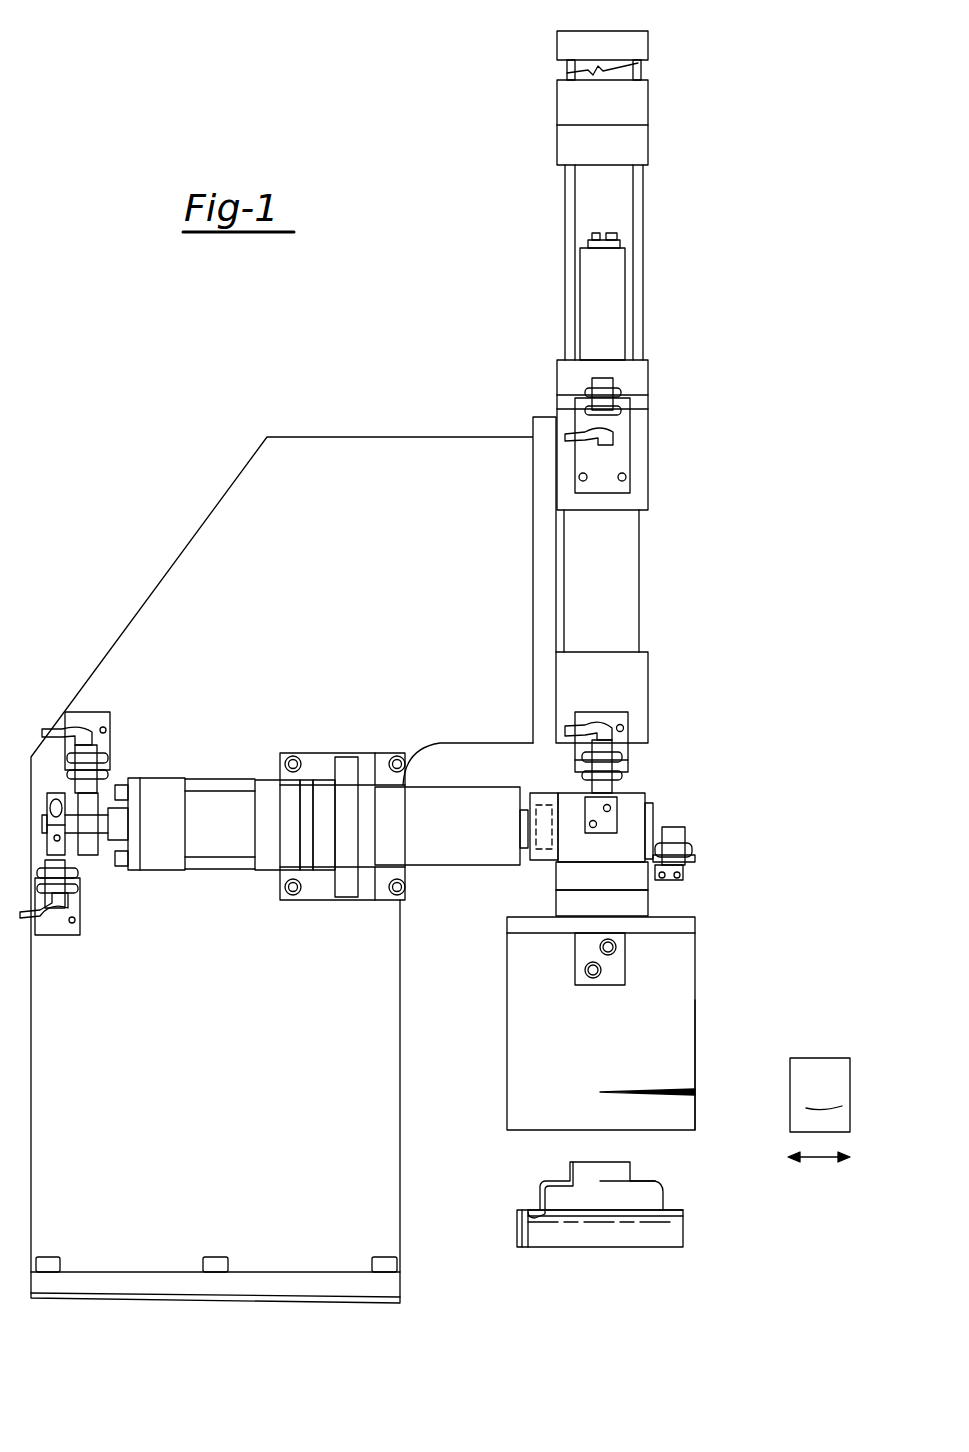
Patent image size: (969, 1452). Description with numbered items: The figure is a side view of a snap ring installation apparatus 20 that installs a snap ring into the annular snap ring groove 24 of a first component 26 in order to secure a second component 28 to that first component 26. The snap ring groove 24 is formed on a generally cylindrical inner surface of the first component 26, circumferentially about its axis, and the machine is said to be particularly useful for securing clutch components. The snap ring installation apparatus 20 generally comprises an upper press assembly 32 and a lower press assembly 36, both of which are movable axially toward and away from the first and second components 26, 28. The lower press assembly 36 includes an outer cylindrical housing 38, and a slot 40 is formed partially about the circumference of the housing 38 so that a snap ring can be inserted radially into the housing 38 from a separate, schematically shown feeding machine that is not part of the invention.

The snap ring installation apparatus 20 is at (641, 596).
The annular snap ring groove 24 is at (527, 1210).
The first component 26 is at (508, 1231).
The second component 28 is at (664, 1178).
The upper press assembly 32 is at (546, 878).
The lower press assembly 36 is at (705, 953).
The outer cylindrical housing 38 is at (697, 997).
The slot 40 is at (695, 1092).